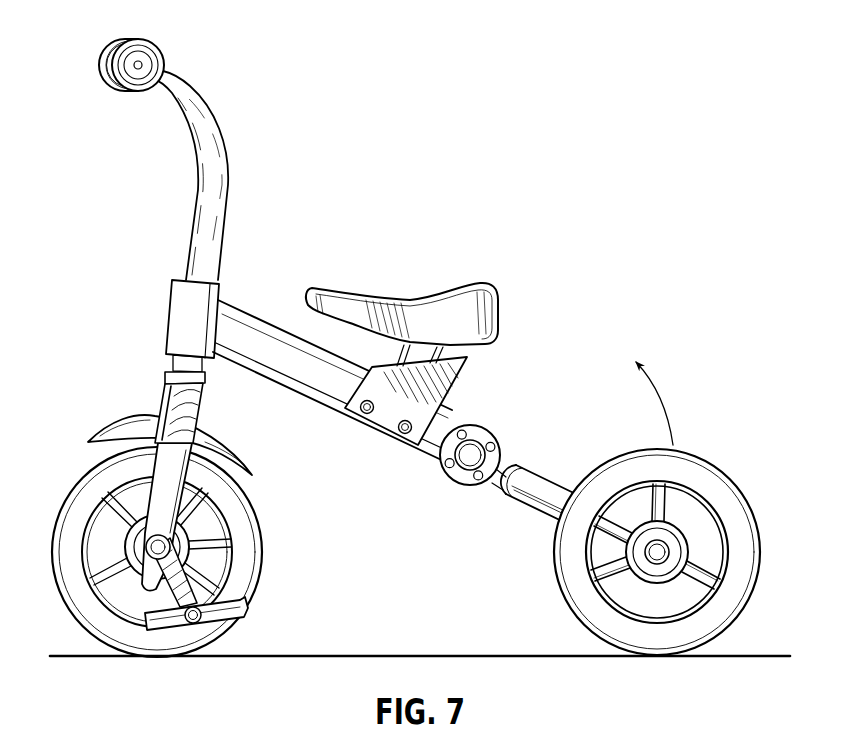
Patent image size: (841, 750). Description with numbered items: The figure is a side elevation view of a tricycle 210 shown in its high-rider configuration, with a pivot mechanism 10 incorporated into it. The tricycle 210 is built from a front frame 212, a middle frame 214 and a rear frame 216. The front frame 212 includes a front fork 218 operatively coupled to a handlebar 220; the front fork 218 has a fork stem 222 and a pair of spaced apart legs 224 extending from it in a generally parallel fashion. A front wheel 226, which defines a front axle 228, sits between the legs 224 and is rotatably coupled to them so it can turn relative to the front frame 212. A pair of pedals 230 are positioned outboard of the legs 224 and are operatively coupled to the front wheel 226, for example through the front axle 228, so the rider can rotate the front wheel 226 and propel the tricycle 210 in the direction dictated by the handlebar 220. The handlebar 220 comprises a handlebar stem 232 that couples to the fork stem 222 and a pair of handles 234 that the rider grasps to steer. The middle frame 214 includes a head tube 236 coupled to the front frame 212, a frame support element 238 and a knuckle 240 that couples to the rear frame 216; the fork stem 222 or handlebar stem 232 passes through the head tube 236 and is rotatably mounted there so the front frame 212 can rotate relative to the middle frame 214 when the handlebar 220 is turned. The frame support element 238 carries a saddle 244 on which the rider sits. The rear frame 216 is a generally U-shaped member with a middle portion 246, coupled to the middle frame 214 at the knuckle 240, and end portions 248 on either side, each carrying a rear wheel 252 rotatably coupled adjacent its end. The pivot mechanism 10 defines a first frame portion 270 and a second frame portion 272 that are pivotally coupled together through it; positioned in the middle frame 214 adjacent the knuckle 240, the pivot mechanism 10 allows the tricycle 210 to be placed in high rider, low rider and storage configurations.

The pivot mechanism 10 is at (455, 483).
The tricycle 210 is at (571, 214).
The front frame 212 is at (182, 316).
The middle frame 214 is at (332, 370).
The rear frame 216 is at (531, 475).
The front fork 218 is at (145, 501).
The handlebar 220 is at (118, 47).
The fork stem 222 is at (178, 366).
The legs 224 is at (172, 478).
The front wheel 226 is at (74, 490).
The front axle 228 is at (170, 541).
The pedals 230 is at (245, 600).
The handlebar stem 232 is at (229, 150).
The handles 234 is at (98, 67).
The head tube 236 is at (171, 301).
The frame support element 238 is at (285, 387).
The knuckle 240 is at (509, 500).
The saddle 244 is at (464, 285).
The middle portion 246 is at (531, 460).
The end portions 248 is at (617, 523).
The rear wheel 252 is at (657, 526).
The first frame portion 270 is at (371, 432).
The second frame portion 272 is at (565, 483).